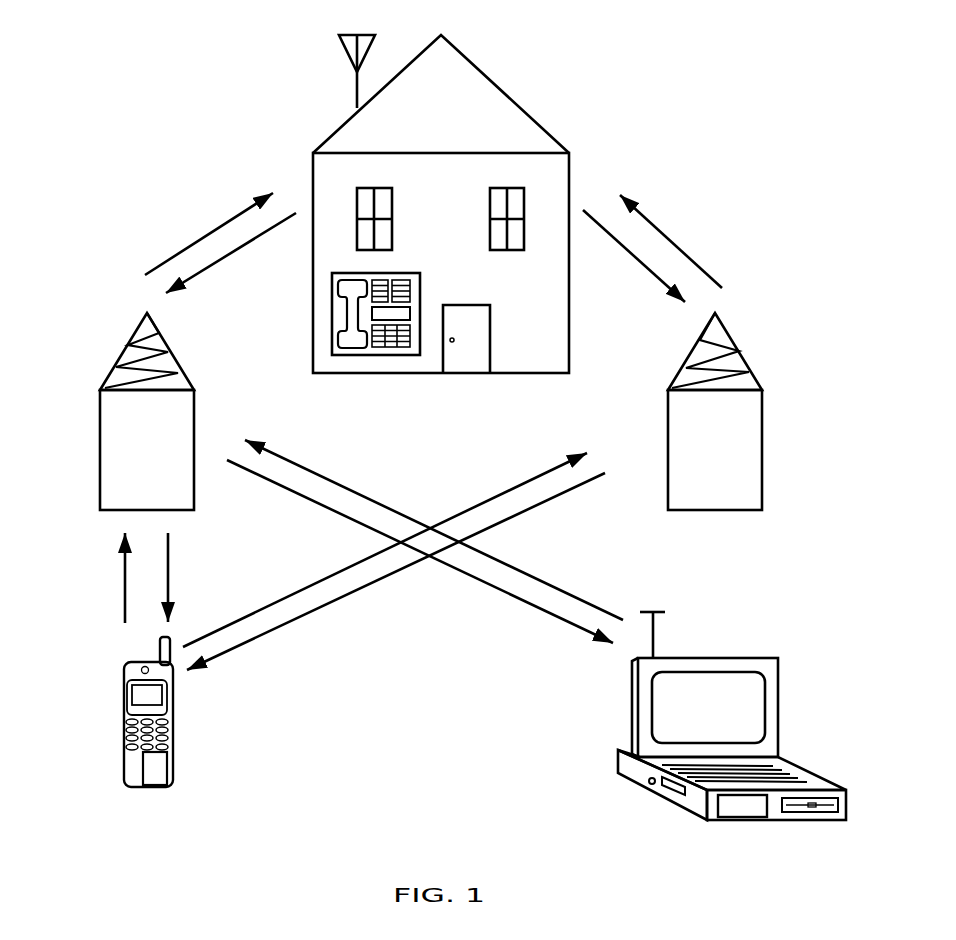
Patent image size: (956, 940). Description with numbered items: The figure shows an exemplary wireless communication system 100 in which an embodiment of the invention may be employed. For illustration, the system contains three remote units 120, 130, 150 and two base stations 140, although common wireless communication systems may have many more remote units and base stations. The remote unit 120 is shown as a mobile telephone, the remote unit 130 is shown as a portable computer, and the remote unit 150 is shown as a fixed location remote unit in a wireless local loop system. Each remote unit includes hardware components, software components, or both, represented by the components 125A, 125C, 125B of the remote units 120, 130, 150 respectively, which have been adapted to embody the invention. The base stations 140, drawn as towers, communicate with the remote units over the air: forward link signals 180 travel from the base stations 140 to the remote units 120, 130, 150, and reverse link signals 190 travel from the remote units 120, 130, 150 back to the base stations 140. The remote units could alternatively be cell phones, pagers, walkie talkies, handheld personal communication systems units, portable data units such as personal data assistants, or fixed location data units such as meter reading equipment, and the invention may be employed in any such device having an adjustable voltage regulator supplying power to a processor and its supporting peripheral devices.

The wireless communication system 100 is at (160, 67).
The remote unit 120 is at (127, 668).
The component 125A is at (157, 773).
The component 125B is at (403, 315).
The component 125C is at (750, 808).
The remote unit 130 is at (760, 657).
The base station 140 is at (123, 350).
The remote unit 150 is at (332, 325).
The forward link signals 180 is at (215, 230).
The reverse link signals 190 is at (217, 263).